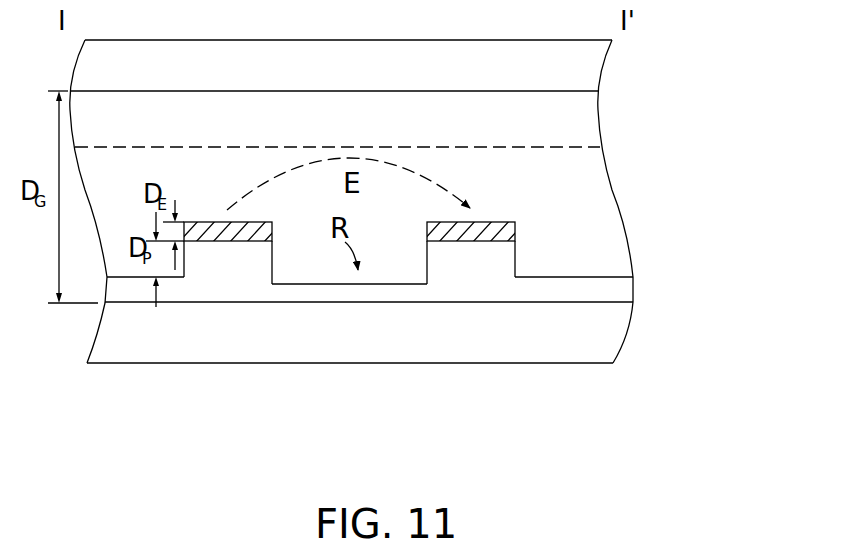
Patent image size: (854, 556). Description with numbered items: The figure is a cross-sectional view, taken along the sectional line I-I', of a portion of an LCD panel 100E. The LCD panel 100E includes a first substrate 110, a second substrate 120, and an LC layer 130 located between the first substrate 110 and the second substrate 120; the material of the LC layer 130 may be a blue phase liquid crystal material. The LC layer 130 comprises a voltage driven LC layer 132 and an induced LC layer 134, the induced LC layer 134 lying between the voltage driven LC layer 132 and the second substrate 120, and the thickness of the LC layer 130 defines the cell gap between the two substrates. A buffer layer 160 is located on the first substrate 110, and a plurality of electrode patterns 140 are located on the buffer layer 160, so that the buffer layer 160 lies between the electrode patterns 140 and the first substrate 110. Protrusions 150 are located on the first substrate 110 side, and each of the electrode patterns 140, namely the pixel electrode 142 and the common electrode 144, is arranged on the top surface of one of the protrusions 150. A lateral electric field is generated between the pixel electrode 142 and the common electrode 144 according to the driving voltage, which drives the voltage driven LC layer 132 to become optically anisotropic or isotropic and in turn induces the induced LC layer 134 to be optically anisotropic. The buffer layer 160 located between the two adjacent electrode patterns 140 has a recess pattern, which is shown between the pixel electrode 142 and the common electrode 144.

The LCD panel 100E is at (615, 472).
The first substrate 110 is at (594, 335).
The second substrate 120 is at (594, 70).
The LC layer 130 is at (693, 108).
The voltage driven LC layer 132 is at (592, 203).
The induced LC layer 134 is at (590, 117).
The electrode patterns 140 is at (473, 412).
The pixel electrode 142 is at (247, 235).
The common electrode 144 is at (443, 235).
The protrusions 150 is at (208, 267).
The buffer layer 160 is at (594, 290).